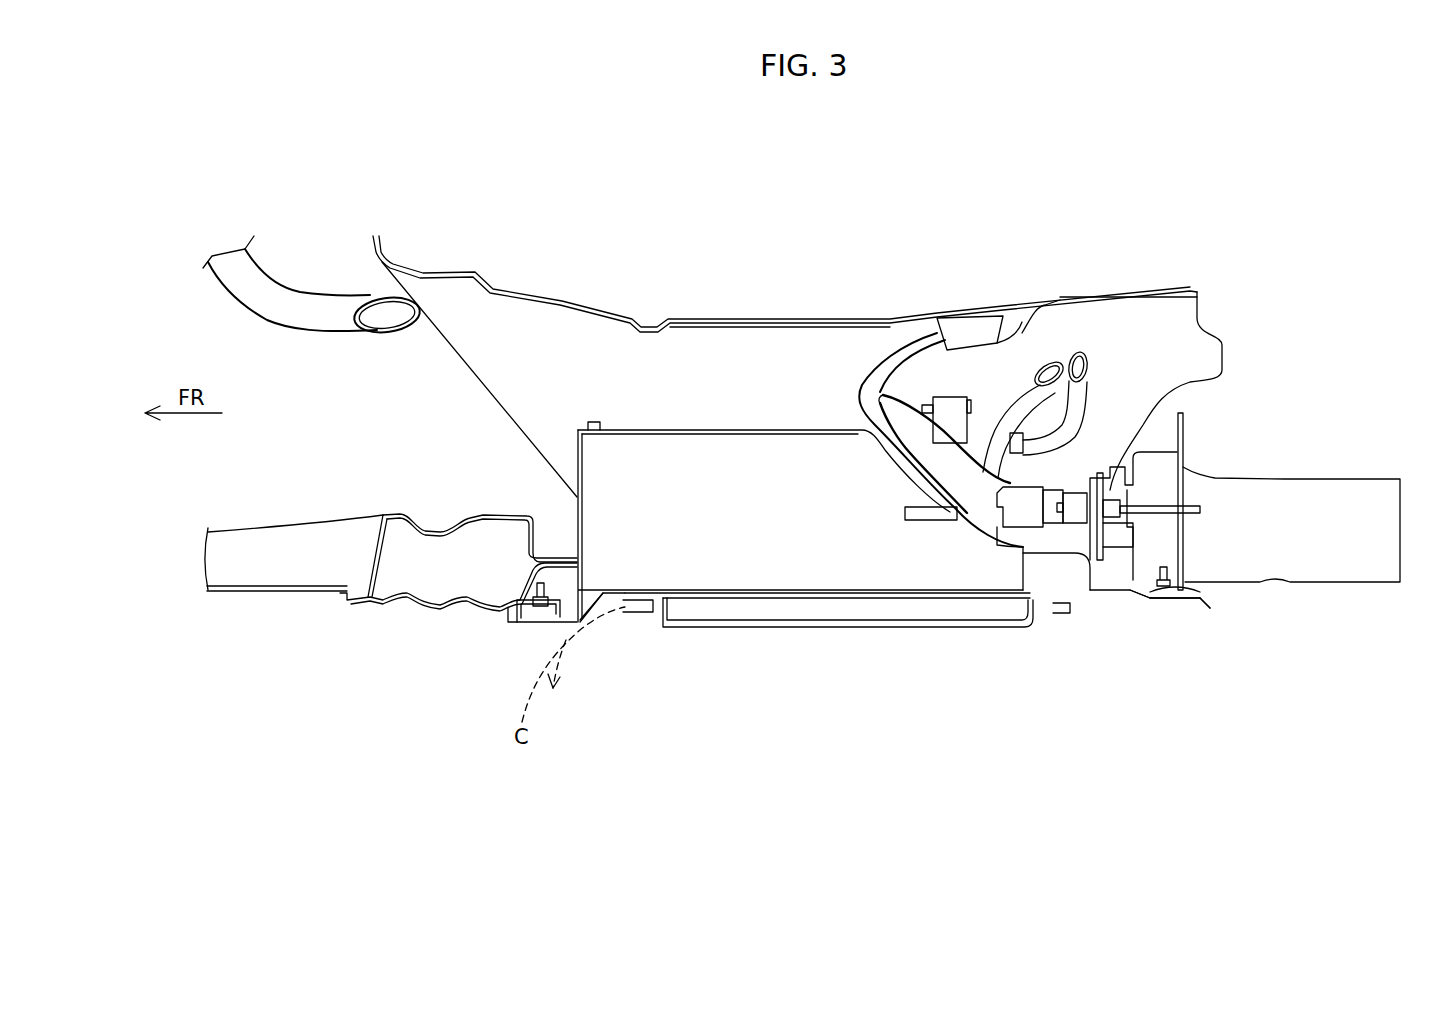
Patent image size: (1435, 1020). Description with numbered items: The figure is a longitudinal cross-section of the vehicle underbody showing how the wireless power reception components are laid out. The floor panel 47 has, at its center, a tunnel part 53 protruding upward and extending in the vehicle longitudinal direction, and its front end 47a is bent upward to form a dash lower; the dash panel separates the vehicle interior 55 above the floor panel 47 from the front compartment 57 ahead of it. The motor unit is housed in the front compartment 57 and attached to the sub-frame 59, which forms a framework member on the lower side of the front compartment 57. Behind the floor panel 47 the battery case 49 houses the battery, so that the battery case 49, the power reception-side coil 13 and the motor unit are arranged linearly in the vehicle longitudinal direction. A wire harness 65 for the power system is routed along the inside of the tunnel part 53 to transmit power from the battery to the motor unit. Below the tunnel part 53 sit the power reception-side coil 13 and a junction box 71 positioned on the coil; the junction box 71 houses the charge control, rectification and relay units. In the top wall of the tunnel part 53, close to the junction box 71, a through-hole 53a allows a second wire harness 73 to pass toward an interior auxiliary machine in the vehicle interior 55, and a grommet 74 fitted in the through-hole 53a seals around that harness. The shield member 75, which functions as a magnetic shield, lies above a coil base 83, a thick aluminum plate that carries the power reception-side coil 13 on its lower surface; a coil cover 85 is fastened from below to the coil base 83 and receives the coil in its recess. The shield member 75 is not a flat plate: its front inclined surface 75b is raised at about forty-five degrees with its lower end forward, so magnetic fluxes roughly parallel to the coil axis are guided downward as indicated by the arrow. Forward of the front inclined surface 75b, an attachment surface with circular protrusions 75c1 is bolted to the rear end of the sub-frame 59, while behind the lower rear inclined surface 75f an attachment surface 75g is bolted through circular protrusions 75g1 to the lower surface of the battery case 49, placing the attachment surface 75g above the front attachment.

The power reception-side coil 13 is at (890, 606).
The floor panel 47 is at (763, 309).
The front end of the floor panel 47a is at (450, 352).
The battery case 49 is at (1345, 582).
The tunnel part 53 is at (824, 320).
The through-hole 53a is at (990, 316).
The vehicle interior 55 is at (990, 180).
The front compartment 57 is at (307, 374).
The sub-frame 59 is at (255, 593).
The wire harness 65 is at (313, 290).
The junction box 71 is at (692, 425).
The wire harness 73 is at (880, 345).
The grommet 74 is at (1022, 333).
The shield member 75 is at (618, 597).
The front inclined surface 75b is at (600, 596).
The circular protrusions 75c1 is at (553, 612).
The rear inclined surface 75f is at (1130, 598).
The attachment surface 75g is at (1168, 605).
The circular protrusions 75g1 is at (1195, 597).
The coil base 83 is at (840, 598).
The coil cover 85 is at (980, 628).